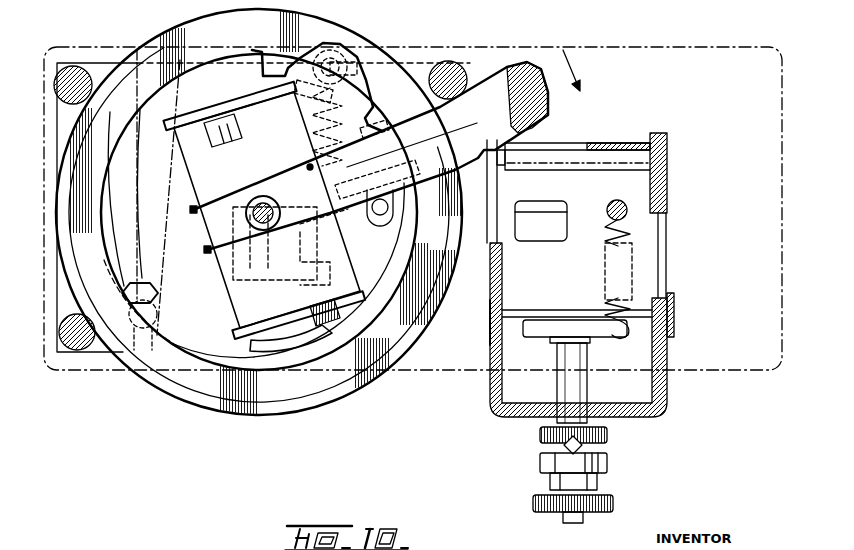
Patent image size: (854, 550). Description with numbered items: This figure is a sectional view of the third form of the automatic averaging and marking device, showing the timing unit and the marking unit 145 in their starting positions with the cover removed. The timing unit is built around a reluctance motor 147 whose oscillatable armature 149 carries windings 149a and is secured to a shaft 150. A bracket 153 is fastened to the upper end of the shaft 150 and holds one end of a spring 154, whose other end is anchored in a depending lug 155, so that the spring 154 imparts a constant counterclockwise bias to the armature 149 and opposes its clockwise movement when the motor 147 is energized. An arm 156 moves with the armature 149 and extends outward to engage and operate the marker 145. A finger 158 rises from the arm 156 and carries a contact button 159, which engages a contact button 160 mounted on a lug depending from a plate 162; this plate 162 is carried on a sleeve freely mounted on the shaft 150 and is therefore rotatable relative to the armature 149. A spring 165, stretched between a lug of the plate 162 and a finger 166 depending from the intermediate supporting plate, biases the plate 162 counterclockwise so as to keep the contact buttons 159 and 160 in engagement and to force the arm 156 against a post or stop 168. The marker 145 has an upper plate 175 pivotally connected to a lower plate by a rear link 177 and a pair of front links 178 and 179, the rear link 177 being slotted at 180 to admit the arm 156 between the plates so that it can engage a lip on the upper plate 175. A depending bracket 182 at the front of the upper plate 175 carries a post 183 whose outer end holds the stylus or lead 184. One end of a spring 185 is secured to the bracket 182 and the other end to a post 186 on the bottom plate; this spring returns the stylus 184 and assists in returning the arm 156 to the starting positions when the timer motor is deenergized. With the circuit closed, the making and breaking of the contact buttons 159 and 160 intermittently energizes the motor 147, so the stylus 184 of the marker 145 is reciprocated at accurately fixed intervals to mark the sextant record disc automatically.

The marking unit 145 is at (688, 186).
The reluctance motor 147 is at (246, 420).
The oscillatable armature 149 is at (305, 352).
The windings 149a is at (343, 270).
The shaft 150 is at (246, 222).
The bracket 153 is at (257, 290).
The spring 154 is at (325, 232).
The depending lug 155 is at (371, 63).
The arm 156 is at (508, 66).
The finger 158 is at (370, 126).
The contact button 159 is at (309, 166).
The contact button 160 is at (396, 200).
The plate 162 is at (378, 306).
The spring 165 is at (135, 235).
The finger 166 is at (160, 336).
The post or stop 168 is at (457, 62).
The upper plate 175 is at (640, 268).
The rear link 177 is at (598, 143).
The front link 178 is at (489, 322).
The front link 179 is at (675, 329).
The slot 180 is at (548, 206).
The depending bracket 182 is at (528, 338).
The post 183 is at (589, 381).
The stylus or lead 184 is at (608, 444).
The spring 185 is at (604, 279).
The post 186 is at (620, 196).